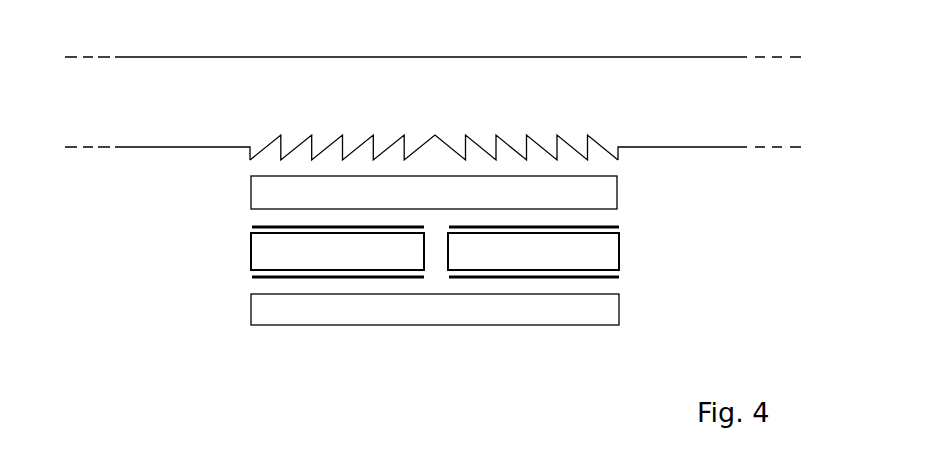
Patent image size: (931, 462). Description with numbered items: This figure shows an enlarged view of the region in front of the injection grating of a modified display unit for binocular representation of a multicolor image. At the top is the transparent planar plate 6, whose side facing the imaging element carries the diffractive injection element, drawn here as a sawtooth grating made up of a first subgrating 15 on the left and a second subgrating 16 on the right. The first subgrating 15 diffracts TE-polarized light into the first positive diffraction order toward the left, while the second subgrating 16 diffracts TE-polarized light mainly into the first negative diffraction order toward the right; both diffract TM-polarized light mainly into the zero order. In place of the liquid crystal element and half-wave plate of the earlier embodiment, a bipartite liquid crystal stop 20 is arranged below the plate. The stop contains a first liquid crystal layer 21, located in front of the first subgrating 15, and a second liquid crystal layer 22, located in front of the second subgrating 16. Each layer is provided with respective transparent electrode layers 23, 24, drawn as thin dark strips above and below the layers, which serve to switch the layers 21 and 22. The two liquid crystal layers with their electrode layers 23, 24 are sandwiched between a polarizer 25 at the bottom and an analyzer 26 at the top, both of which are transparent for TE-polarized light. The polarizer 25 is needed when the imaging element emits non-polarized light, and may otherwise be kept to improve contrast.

The transparent planar plate 6 is at (435, 99).
The first subgrating 15 is at (243, 133).
The second subgrating 16 is at (625, 135).
The bipartite liquid crystal stop 20 is at (443, 285).
The first liquid crystal layer 21 is at (352, 262).
The second liquid crystal layer 22 is at (537, 262).
The transparent electrode layer 23 is at (231, 227).
The transparent electrode layer 24 is at (638, 228).
The polarizer 25 is at (638, 310).
The analyzer 26 is at (638, 194).